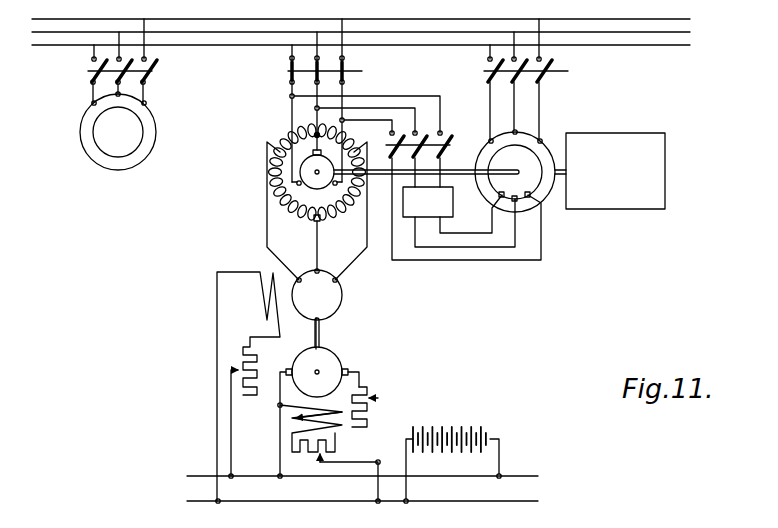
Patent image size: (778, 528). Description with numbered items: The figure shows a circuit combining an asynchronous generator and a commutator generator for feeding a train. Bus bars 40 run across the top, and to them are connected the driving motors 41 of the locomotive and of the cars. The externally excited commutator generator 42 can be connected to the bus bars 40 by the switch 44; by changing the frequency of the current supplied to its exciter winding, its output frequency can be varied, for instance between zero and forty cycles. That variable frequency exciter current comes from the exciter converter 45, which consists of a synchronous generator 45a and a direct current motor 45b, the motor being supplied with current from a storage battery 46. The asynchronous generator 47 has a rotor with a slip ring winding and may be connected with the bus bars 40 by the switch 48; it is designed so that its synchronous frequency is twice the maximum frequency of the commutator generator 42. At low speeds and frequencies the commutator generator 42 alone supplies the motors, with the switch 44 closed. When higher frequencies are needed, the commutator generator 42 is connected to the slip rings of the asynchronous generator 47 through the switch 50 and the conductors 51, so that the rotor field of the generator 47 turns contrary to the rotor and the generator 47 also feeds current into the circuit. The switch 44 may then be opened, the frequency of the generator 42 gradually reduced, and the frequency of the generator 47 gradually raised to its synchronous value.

The bus bars 40 is at (243, 44).
The driving motors 41 is at (156, 131).
The commutator generator 42 is at (280, 135).
The switch 44 is at (337, 69).
The exciter converter 45 is at (381, 339).
The synchronous generator 45a is at (342, 292).
The direct current motor 45b is at (342, 362).
The storage battery 46 is at (487, 402).
The asynchronous generator 47 is at (547, 195).
The switch 48 is at (538, 79).
The switch 50 is at (450, 145).
The conductors 51 is at (387, 123).